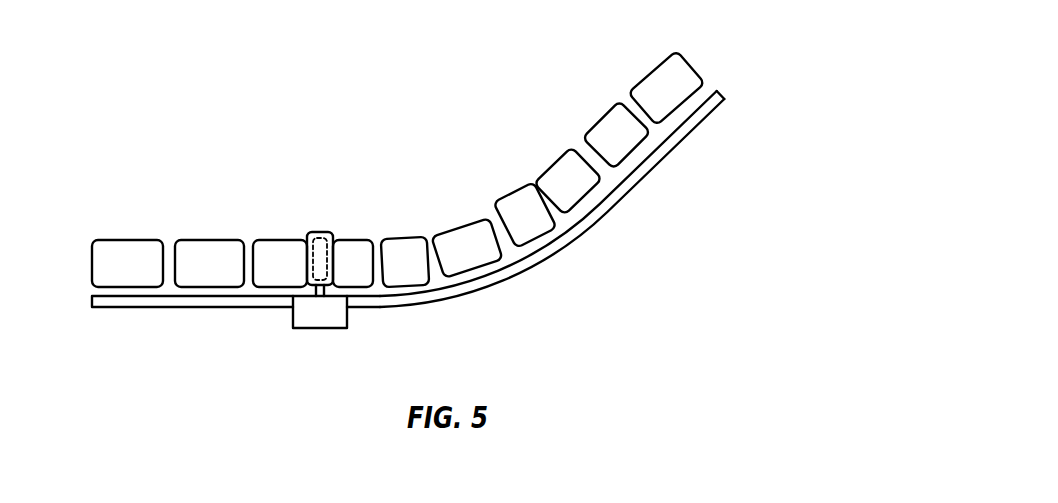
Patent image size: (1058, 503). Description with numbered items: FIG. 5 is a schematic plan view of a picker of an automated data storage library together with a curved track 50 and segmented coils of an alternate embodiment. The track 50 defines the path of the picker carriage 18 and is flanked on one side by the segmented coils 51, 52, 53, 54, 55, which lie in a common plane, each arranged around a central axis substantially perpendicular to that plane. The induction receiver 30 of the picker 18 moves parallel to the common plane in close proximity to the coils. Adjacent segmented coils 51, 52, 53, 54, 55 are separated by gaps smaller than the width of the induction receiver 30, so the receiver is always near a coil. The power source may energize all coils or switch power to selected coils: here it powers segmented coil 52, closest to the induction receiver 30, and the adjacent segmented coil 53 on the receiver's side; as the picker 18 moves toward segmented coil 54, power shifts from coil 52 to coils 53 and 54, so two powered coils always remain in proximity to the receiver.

The picker carriage 18 is at (329, 329).
The induction receiver 30 is at (321, 232).
The track 50 is at (210, 310).
The segmented coil 51 is at (193, 240).
The segmented coil 52 is at (268, 240).
The segmented coil 53 is at (349, 240).
The segmented coil 54 is at (421, 286).
The segmented coil 55 is at (672, 52).